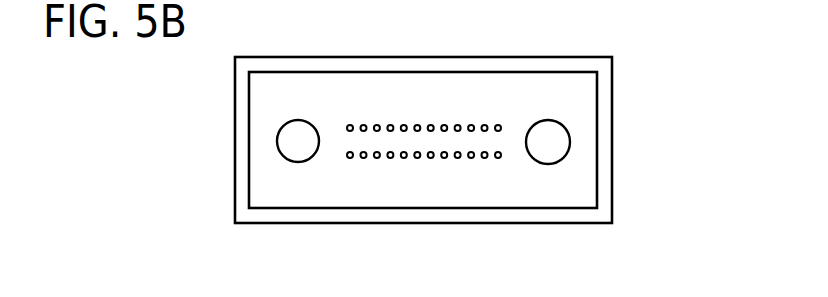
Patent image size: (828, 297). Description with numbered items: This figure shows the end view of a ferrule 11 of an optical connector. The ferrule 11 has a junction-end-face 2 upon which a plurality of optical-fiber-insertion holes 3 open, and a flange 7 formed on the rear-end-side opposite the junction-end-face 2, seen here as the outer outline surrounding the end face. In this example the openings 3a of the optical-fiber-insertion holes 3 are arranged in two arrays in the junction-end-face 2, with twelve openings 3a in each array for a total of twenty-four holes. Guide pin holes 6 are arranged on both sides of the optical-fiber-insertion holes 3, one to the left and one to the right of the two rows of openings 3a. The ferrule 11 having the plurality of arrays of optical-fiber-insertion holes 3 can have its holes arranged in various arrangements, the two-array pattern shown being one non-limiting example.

The ferrule 11 is at (486, 135).
The flange 7 is at (603, 138).
The junction-end-face 2 is at (509, 88).
The guide pin holes 6 is at (293, 152).
The optical-fiber-insertion holes 3 is at (430, 135).
The openings 3a is at (363, 125).